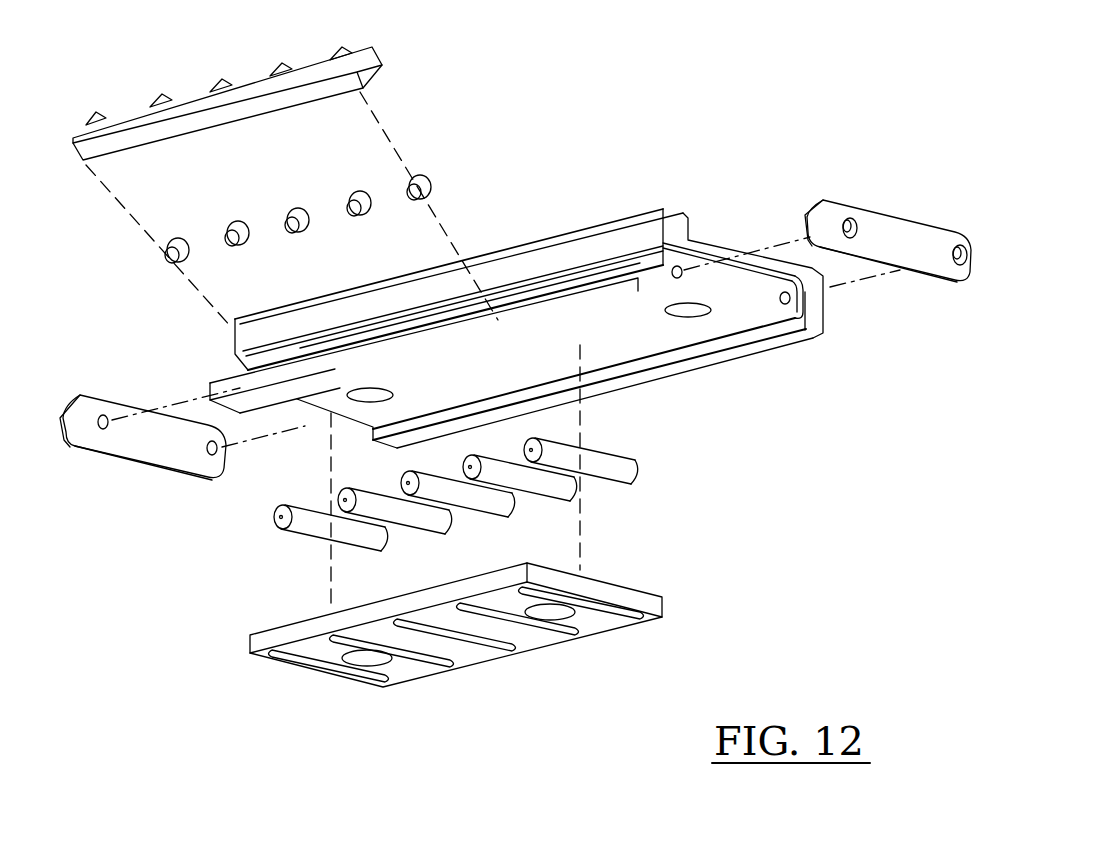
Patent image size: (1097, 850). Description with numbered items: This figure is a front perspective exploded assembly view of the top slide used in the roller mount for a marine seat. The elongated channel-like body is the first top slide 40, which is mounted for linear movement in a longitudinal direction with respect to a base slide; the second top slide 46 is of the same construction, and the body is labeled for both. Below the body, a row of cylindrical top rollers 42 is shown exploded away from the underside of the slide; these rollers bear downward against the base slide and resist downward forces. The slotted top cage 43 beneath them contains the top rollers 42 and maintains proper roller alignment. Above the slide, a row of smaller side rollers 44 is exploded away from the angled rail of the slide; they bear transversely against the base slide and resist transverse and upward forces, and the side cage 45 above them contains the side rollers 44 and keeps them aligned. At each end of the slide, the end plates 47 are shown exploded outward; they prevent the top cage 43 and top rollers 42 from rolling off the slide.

The first top slide 40 is at (527, 293).
The top rollers 42 is at (628, 472).
The top cage 43 is at (248, 640).
The side rollers 44 is at (430, 182).
The side cage 45 is at (187, 105).
The second top slide 46 is at (643, 233).
The end plates 47 is at (152, 435).